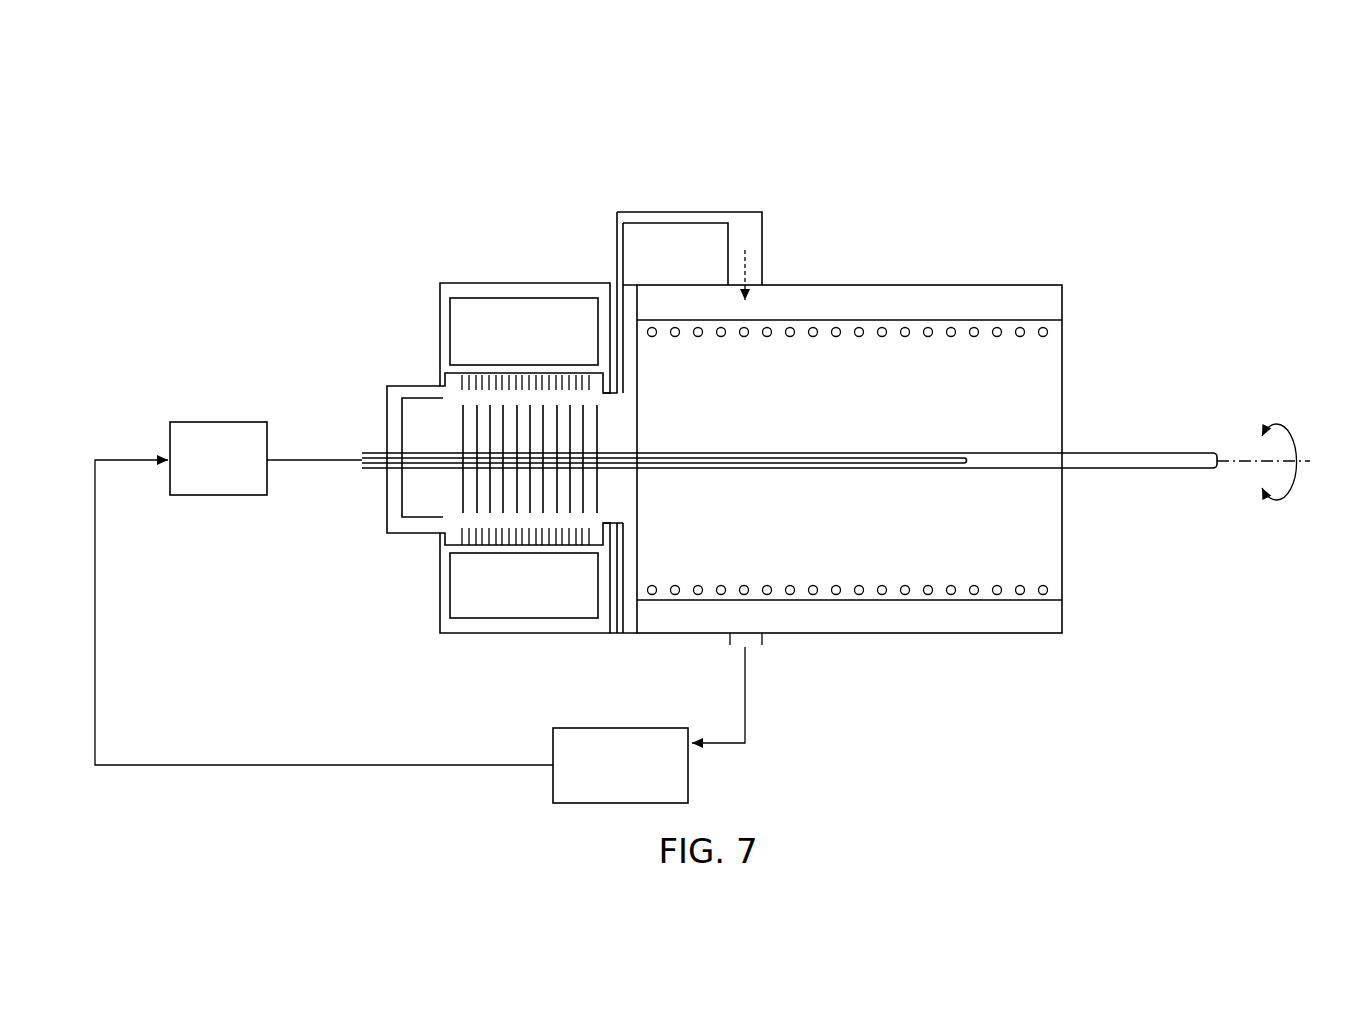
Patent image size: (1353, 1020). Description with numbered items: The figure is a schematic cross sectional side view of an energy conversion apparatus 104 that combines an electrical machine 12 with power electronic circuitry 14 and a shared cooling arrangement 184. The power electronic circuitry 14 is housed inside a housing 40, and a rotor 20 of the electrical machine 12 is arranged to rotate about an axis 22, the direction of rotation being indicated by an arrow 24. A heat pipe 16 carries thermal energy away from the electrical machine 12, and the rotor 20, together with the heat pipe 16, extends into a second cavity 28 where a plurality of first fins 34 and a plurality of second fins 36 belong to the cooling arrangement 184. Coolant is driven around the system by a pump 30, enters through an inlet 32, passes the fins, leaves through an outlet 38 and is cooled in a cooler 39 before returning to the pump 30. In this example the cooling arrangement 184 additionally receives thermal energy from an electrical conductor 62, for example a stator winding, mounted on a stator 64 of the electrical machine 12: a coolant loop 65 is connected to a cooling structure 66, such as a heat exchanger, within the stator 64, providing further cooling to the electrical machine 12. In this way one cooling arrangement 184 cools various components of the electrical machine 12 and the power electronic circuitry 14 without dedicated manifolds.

The energy conversion apparatus 104 is at (1050, 126).
The cooling arrangement 184 is at (366, 555).
The housing 40 is at (478, 282).
The power electronic circuitry 14 is at (485, 337).
The second cavity 28 is at (440, 545).
The second fins 36 is at (455, 380).
The first fins 34 is at (465, 497).
The inlet 32 is at (365, 462).
The outlet 38 is at (612, 590).
The electrical machine 12 is at (878, 662).
The cooling structure 66 is at (860, 298).
The electrical conductor 62 is at (970, 338).
The stator 64 is at (866, 426).
The coolant loop 65 is at (692, 211).
The rotor 20 is at (1139, 449).
The heat pipe 16 is at (735, 450).
The axis 22 is at (1237, 466).
The arrow 24 is at (1292, 440).
The pump 30 is at (205, 420).
The cooler 39 is at (690, 760).